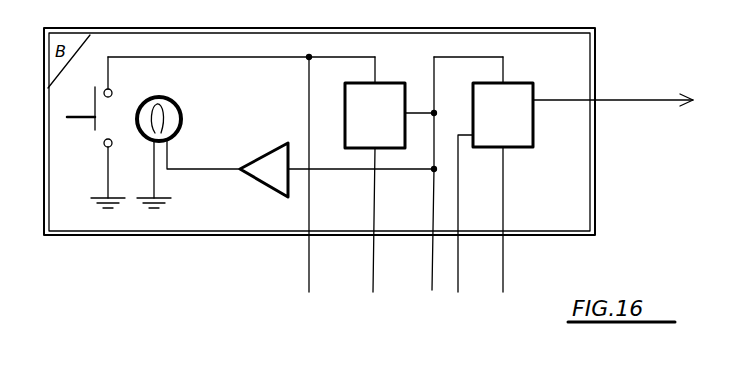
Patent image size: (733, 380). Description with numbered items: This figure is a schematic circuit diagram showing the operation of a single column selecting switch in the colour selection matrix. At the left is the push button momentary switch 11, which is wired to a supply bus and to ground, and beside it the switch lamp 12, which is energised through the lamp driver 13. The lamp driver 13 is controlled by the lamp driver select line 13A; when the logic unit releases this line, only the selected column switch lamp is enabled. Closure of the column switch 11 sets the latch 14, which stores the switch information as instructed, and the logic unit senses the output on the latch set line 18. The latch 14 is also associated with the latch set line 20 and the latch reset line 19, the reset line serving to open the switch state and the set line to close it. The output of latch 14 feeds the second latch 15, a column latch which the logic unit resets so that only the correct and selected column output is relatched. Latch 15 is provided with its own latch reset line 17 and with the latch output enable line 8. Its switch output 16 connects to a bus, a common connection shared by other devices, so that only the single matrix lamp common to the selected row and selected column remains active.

The latch output enable line 8 is at (461, 224).
The push button momentary switch 11 is at (97, 132).
The switch lamp 12 is at (188, 152).
The lamp driver 13 is at (337, 170).
The lamp driver select line 13A is at (267, 187).
The latch 14 is at (389, 102).
The latch 15 is at (503, 102).
The switch output 16 is at (613, 90).
The latch reset line 17 is at (505, 232).
The latch set line 18 is at (426, 242).
The latch reset line 19 is at (368, 232).
The latch set line 20 is at (304, 187).